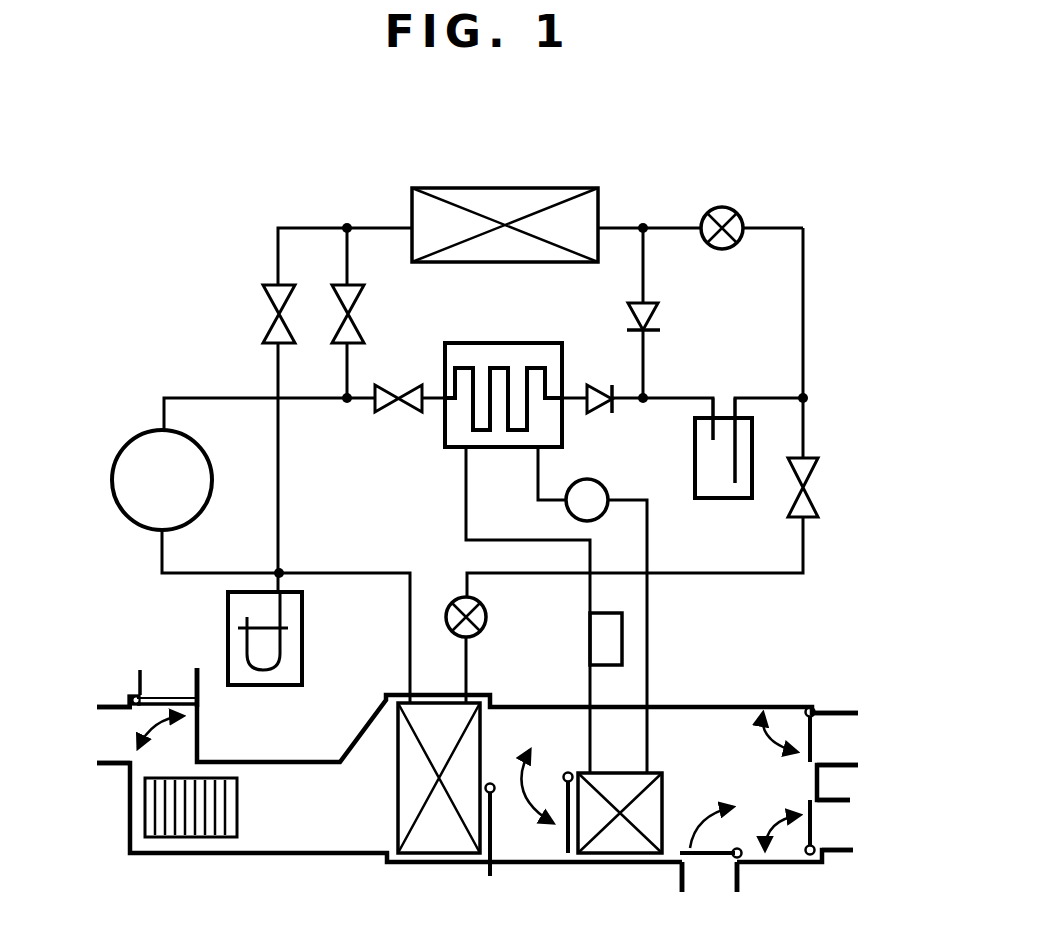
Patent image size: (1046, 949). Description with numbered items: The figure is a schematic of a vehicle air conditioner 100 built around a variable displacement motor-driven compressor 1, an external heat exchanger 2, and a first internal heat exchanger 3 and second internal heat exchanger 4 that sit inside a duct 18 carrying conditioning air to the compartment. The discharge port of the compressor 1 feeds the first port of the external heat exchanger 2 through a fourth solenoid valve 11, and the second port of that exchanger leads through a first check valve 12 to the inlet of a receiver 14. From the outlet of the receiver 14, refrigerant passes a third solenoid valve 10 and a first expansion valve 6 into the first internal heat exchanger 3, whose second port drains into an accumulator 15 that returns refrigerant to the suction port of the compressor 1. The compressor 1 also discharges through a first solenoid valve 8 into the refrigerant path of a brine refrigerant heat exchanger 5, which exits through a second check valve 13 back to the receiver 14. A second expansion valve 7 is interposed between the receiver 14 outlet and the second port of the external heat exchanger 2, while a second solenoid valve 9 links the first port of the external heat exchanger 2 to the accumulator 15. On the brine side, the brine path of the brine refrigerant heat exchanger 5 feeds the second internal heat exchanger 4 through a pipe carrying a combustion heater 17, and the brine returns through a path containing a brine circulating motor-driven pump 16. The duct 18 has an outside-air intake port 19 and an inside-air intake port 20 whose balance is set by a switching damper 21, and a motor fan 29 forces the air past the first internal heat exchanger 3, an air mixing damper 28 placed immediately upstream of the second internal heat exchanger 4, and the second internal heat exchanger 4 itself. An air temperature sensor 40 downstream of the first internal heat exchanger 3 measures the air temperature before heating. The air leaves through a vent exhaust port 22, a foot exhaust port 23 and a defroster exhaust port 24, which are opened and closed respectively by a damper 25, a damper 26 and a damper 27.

The air conditioner 100 is at (652, 192).
The variable displacement motor-driven compressor 1 is at (142, 435).
The external heat exchanger 2 is at (500, 188).
The first internal heat exchanger 3 is at (428, 864).
The second internal heat exchanger 4 is at (617, 856).
The brine refrigerant heat exchanger 5 is at (510, 343).
The first expansion valve 6 is at (487, 624).
The second expansion valve 7 is at (738, 215).
The first solenoid valve 8 is at (410, 391).
The second solenoid valve 9 is at (267, 323).
The third solenoid valve 10 is at (818, 486).
The fourth solenoid valve 11 is at (356, 323).
The first check valve 12 is at (652, 319).
The second check valve 13 is at (601, 386).
The receiver 14 is at (695, 462).
The accumulator 15 is at (302, 640).
The brine circulating motor-driven pump 16 is at (602, 488).
The combustion heater 17 is at (622, 632).
The duct 18 is at (312, 860).
The outside-air intake port 19 is at (157, 683).
The inside-air intake port 20 is at (105, 743).
The switching damper 21 is at (178, 700).
The vent exhaust port 22 is at (838, 728).
The foot exhaust port 23 is at (840, 836).
The defroster exhaust port 24 is at (720, 878).
The damper 25 is at (822, 750).
The damper 26 is at (820, 812).
The damper 27 is at (697, 862).
The air mixing damper 28 is at (564, 853).
The motor fan 29 is at (240, 828).
The air temperature sensor 40 is at (488, 876).